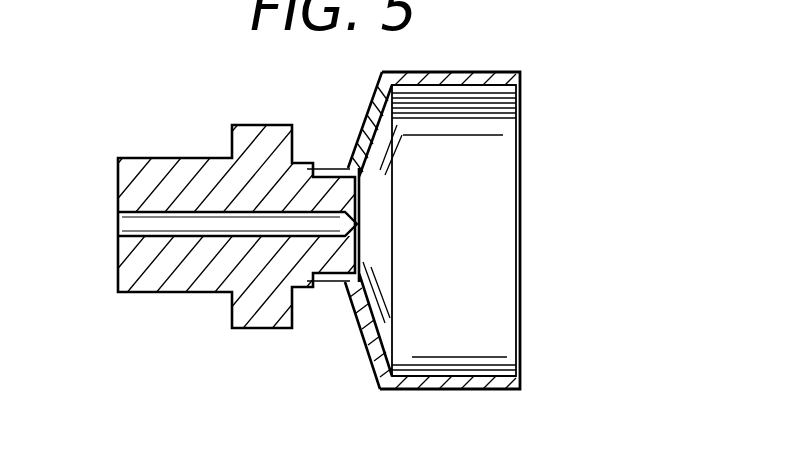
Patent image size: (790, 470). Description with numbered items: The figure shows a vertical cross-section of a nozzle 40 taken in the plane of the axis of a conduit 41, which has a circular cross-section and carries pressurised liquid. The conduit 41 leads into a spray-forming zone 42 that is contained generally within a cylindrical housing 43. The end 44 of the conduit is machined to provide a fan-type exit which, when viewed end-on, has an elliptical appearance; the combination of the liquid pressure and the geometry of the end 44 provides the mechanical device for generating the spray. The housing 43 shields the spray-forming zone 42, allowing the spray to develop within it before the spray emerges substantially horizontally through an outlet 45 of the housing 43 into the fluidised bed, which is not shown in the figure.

The nozzle 40 is at (344, 236).
The conduit 41 is at (118, 225).
The spray-forming zone 42 is at (520, 230).
The cylindrical housing 43 is at (503, 70).
The end of the conduit 44 is at (338, 275).
The outlet 45 is at (520, 342).